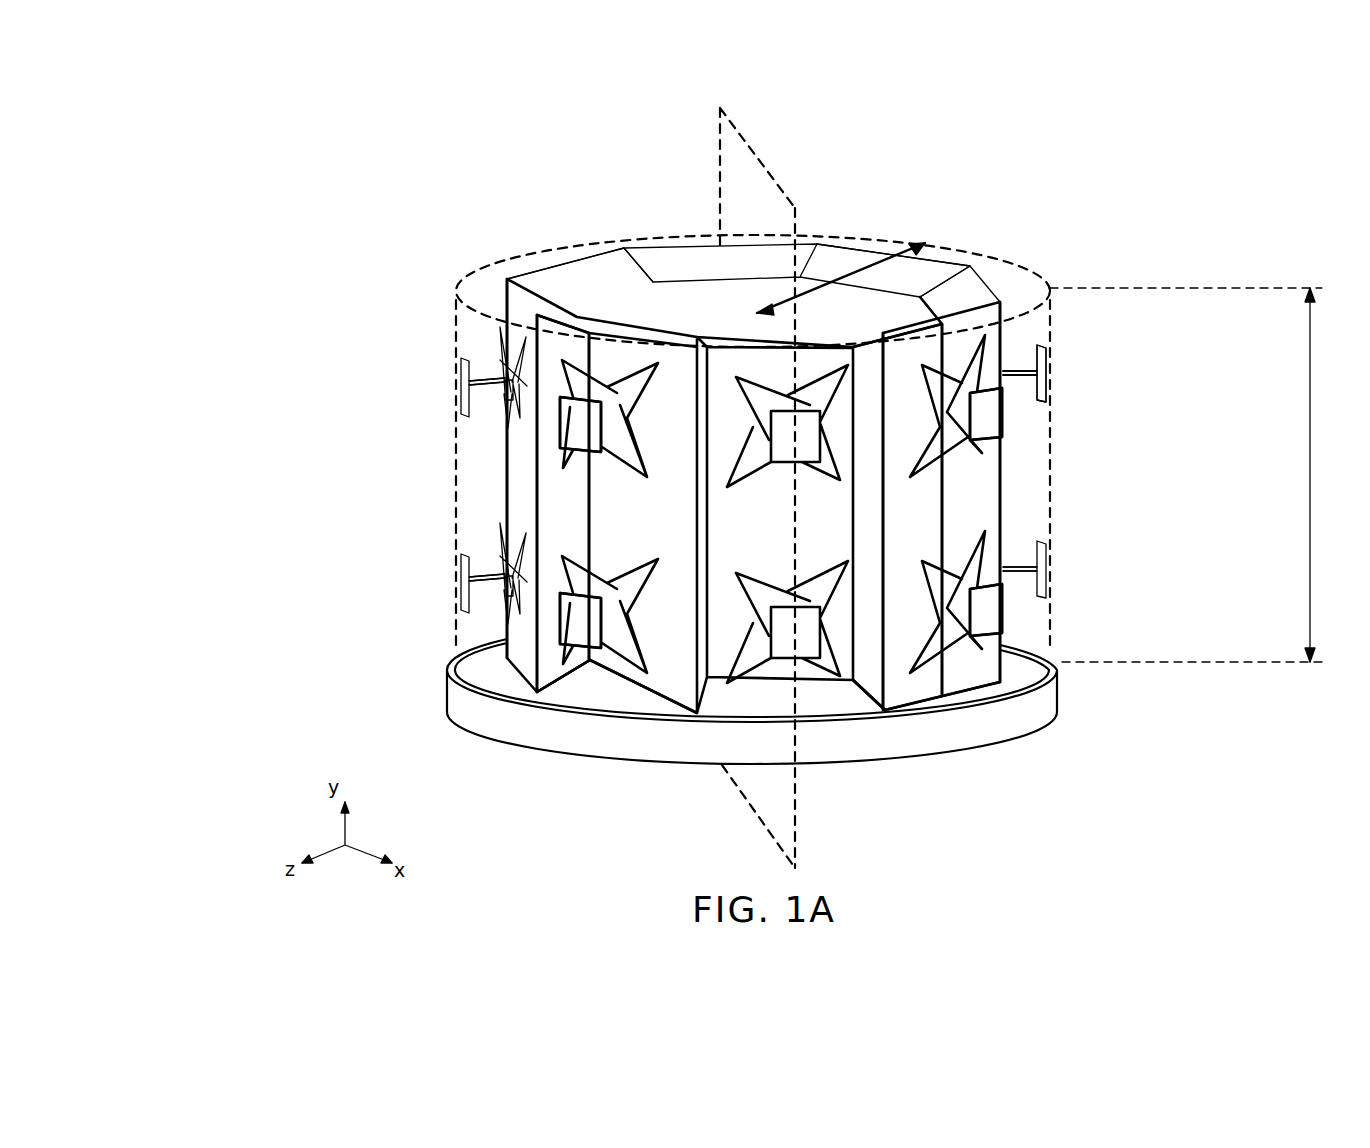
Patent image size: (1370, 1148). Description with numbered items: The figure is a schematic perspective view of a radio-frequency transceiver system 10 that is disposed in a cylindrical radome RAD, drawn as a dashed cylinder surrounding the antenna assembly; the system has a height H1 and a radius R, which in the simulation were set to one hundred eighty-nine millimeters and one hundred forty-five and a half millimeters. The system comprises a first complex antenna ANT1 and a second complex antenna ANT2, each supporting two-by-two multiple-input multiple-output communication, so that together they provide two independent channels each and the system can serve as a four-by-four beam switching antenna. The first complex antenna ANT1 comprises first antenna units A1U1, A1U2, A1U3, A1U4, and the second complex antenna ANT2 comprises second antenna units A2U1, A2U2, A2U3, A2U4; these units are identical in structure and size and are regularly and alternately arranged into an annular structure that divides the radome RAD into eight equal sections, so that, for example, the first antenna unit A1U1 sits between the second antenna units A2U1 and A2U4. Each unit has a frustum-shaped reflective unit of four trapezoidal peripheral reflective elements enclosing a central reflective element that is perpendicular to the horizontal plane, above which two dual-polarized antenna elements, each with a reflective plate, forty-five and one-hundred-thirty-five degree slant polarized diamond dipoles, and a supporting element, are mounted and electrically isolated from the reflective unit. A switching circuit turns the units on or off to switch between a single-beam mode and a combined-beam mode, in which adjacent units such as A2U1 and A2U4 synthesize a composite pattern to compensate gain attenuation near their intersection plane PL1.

The radio-frequency transceiver system 10 is at (1178, 168).
The intersection plane PL1 is at (771, 172).
The cylindrical radome RAD is at (667, 234).
The radius R is at (841, 280).
The height H1 is at (1200, 475).
The first complex antenna ANT1 is at (1277, 170).
The second complex antenna ANT2 is at (230, 178).
The first antenna unit A1U1 is at (1064, 504).
The first antenna unit A1U2 is at (530, 707).
The first antenna unit A1U3 is at (870, 265).
The first antenna unit A1U4 is at (905, 300).
The second antenna unit A2U1 is at (464, 485).
The second antenna unit A2U2 is at (552, 340).
The second antenna unit A2U3 is at (570, 272).
The second antenna unit A2U4 is at (903, 693).